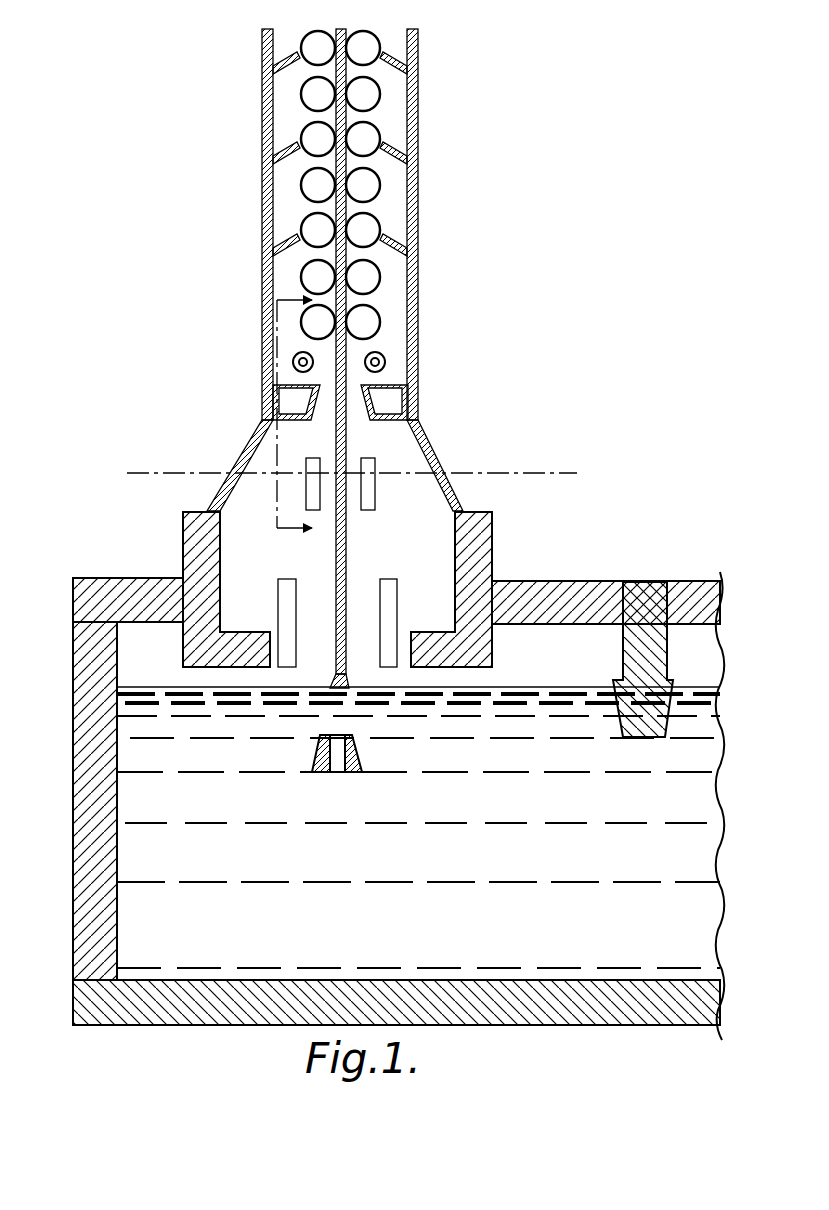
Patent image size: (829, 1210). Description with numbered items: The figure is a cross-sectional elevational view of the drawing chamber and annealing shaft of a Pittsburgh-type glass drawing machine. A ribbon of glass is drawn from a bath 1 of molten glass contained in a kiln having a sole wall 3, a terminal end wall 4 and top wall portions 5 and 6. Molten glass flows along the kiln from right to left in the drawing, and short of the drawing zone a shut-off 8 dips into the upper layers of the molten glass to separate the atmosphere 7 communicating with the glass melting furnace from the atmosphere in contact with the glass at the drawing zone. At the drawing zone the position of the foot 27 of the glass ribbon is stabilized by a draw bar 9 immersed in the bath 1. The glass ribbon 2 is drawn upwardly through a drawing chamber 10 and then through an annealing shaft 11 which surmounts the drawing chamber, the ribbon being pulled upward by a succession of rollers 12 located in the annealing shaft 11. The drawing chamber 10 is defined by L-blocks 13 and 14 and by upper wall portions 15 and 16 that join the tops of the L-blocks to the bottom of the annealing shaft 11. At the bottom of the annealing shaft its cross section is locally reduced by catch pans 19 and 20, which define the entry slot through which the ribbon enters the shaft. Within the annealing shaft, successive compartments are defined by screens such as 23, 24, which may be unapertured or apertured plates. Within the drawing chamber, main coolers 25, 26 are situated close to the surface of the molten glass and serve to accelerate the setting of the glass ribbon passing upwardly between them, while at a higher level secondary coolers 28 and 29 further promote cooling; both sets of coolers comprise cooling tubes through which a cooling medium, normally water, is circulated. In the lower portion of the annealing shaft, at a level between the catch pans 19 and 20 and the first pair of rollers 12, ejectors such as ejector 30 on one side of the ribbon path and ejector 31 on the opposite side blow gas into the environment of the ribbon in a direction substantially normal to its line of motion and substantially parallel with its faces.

The bath of molten glass 1 is at (240, 813).
The glass ribbon 2 is at (346, 553).
The sole wall 3 is at (182, 998).
The terminal end wall 4 is at (95, 800).
The top wall portion 5 is at (130, 585).
The top wall portion 6 is at (558, 578).
The atmosphere 7 is at (690, 663).
The shut-off 8 is at (641, 578).
The draw bar 9 is at (352, 750).
The drawing chamber 10 is at (398, 553).
The annealing shaft 11 is at (340, 224).
The rollers 12 is at (363, 93).
The L-block 13 is at (195, 548).
The L-block 14 is at (470, 548).
The upper wall portion 15 is at (243, 437).
The upper wall portion 16 is at (436, 437).
The catch pan 19 is at (297, 410).
The catch pan 20 is at (390, 410).
The screen 23 is at (283, 248).
The screen 24 is at (398, 245).
The main cooler 25 is at (290, 600).
The main cooler 26 is at (385, 598).
The foot of the glass ribbon 27 is at (344, 686).
The secondary cooler 28 is at (308, 488).
The secondary cooler 29 is at (362, 490).
The ejector 30 is at (293, 360).
The ejector 31 is at (383, 360).